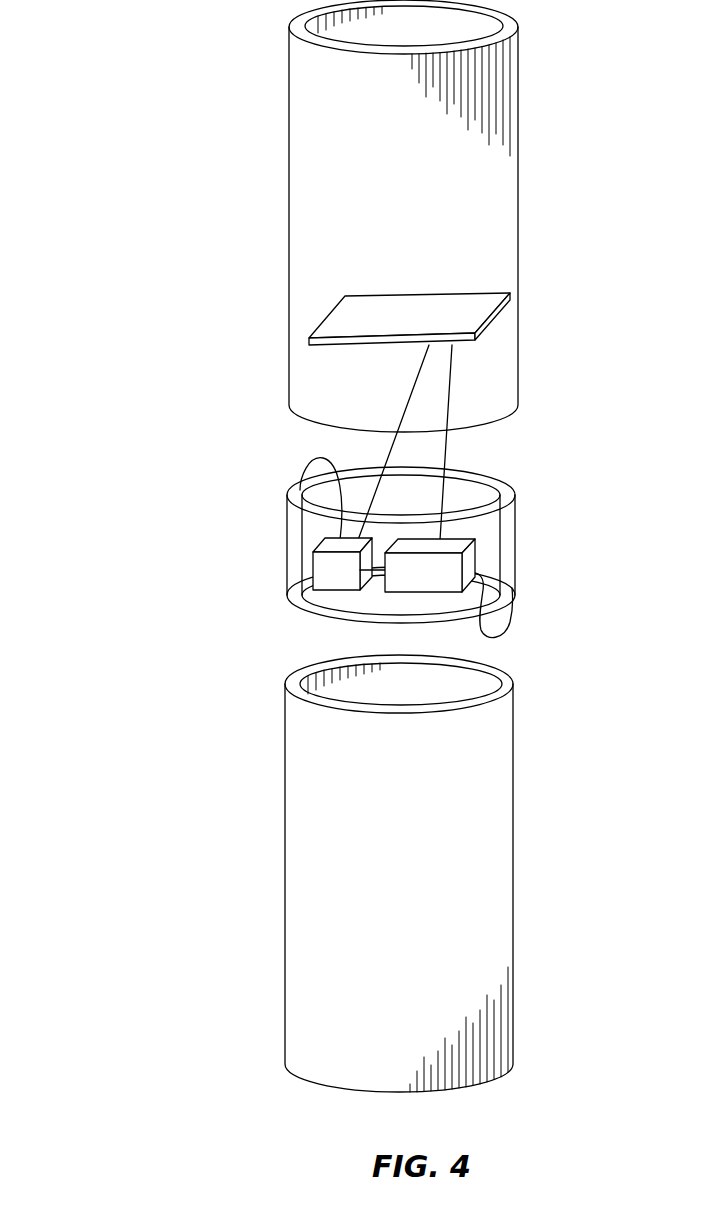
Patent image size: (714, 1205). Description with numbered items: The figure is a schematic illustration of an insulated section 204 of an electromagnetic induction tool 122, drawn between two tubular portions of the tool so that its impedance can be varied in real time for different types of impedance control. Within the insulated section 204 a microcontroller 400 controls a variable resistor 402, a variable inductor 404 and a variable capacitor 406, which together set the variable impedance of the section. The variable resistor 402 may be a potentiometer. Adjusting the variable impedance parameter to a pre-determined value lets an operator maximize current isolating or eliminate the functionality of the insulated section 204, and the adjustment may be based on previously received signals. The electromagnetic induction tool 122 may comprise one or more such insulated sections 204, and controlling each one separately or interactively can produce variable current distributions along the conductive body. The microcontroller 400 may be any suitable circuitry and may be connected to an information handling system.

The electromagnetic induction tool 122 is at (137, 62).
The insulated section 204 is at (213, 500).
The microcontroller 400 is at (500, 310).
The variable resistor 402 is at (332, 590).
The variable inductor 404 is at (442, 592).
The variable capacitor 406 is at (463, 537).